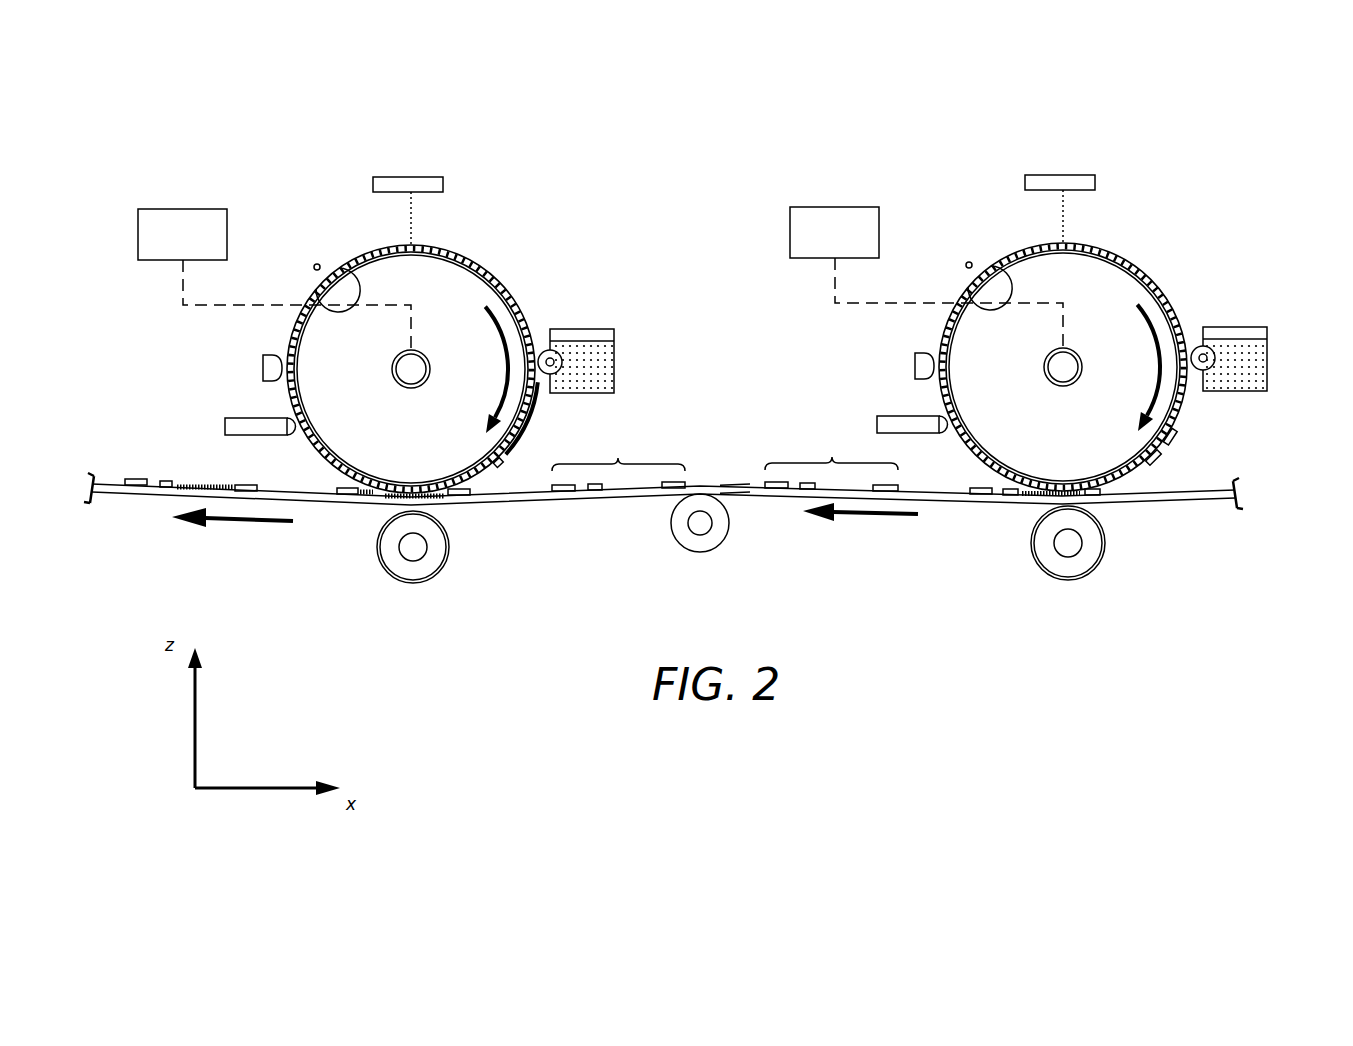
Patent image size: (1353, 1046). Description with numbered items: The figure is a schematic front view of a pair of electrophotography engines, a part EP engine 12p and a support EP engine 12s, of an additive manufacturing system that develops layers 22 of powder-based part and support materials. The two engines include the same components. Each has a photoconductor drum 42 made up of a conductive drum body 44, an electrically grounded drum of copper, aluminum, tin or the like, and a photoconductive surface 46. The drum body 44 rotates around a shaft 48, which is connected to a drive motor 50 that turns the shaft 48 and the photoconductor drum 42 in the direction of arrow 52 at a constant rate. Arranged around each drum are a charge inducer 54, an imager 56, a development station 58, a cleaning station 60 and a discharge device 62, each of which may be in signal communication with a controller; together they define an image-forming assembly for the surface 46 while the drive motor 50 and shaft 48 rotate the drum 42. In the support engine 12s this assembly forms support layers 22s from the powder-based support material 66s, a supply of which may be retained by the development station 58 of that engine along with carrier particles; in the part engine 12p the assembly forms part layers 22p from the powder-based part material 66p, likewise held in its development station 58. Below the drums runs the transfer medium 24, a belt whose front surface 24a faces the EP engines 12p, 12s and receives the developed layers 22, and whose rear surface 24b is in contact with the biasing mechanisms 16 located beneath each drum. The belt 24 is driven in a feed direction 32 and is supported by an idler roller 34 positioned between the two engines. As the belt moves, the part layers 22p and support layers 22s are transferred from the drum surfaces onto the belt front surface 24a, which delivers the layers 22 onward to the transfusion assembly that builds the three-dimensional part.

The EP engine 12p is at (506, 163).
The EP engine 12s is at (1158, 161).
The biasing mechanism 16 is at (435, 556).
The developed layers 22 is at (180, 472).
The part layers 22p is at (534, 430).
The support layers 22s is at (1240, 456).
The transfer medium 24 is at (1198, 510).
The front surface 24a is at (734, 487).
The rear surface 24b is at (735, 497).
The feed direction 32 is at (236, 524).
The idler roller 34 is at (703, 545).
The photoconductor drum 42 is at (522, 282).
The conductive drum body 44 is at (737, 368).
The photoconductive surface 46 is at (472, 257).
The shaft 48 is at (396, 370).
The drive motor 50 is at (151, 209).
The direction of arrow 52 is at (505, 340).
The charge inducer 54 is at (330, 246).
The imager 56 is at (396, 177).
The development station 58 is at (621, 326).
The cleaning station 60 is at (240, 418).
The discharge device 62 is at (263, 360).
The part material 66p is at (598, 355).
The support material 66s is at (1250, 379).